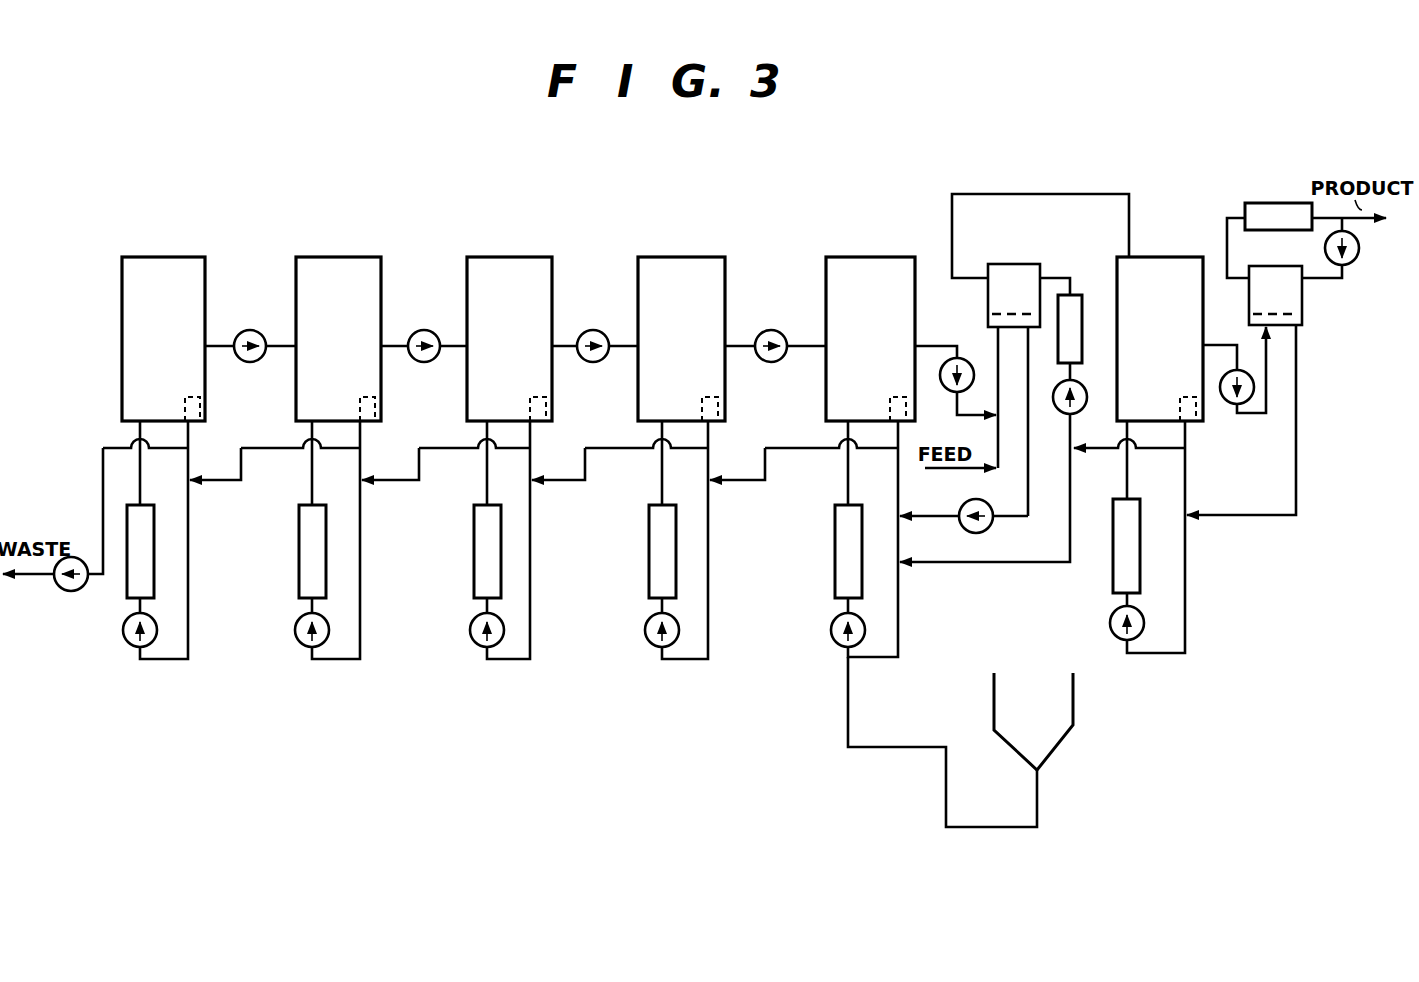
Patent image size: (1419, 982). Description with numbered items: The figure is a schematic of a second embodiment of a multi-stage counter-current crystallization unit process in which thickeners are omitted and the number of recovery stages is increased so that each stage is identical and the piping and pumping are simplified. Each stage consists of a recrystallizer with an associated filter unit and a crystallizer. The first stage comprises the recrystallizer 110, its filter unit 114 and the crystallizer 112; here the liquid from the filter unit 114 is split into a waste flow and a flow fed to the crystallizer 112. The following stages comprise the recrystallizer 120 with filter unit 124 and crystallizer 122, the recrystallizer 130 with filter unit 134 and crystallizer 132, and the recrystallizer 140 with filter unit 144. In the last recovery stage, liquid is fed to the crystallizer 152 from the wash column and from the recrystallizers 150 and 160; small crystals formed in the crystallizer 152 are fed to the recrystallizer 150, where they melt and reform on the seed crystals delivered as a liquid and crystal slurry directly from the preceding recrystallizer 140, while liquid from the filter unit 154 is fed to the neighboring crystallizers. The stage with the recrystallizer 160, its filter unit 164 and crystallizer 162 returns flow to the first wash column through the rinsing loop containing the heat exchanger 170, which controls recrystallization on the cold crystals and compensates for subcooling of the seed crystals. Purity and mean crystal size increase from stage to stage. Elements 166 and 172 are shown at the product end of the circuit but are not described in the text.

The recrystallizer 110 is at (160, 257).
The crystallizer 112 is at (133, 582).
The filter unit 114 is at (184, 396).
The recrystallizer 120 is at (338, 257).
The crystallizer 122 is at (305, 583).
The filter unit 124 is at (359, 396).
The recrystallizer 130 is at (512, 257).
The crystallizer 132 is at (483, 583).
The filter unit 134 is at (528, 396).
The recrystallizer 140 is at (690, 257).
The filter unit 144 is at (702, 396).
The recrystallizer 150 is at (878, 257).
The crystallizer 152 is at (660, 583).
The filter unit 154 is at (889, 396).
The recrystallizer 160 is at (1163, 257).
The crystallizer 162 is at (1127, 577).
The filter unit 164 is at (1179, 396).
The product tank 166 is at (1288, 287).
The heat exchanger 170 is at (1081, 292).
The product cooler 172 is at (1268, 203).